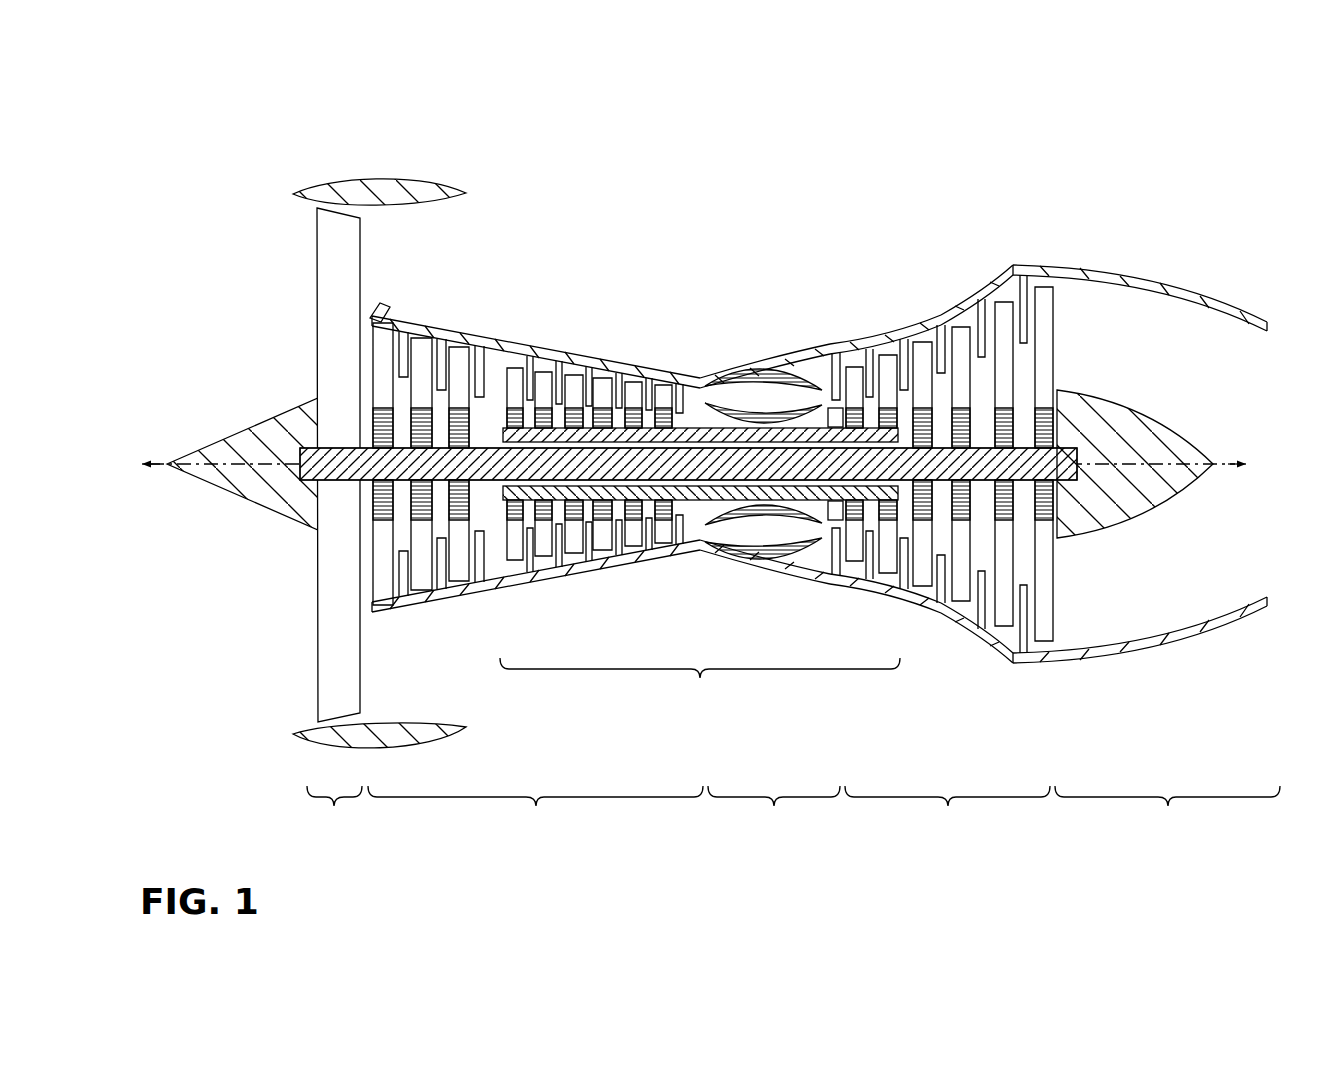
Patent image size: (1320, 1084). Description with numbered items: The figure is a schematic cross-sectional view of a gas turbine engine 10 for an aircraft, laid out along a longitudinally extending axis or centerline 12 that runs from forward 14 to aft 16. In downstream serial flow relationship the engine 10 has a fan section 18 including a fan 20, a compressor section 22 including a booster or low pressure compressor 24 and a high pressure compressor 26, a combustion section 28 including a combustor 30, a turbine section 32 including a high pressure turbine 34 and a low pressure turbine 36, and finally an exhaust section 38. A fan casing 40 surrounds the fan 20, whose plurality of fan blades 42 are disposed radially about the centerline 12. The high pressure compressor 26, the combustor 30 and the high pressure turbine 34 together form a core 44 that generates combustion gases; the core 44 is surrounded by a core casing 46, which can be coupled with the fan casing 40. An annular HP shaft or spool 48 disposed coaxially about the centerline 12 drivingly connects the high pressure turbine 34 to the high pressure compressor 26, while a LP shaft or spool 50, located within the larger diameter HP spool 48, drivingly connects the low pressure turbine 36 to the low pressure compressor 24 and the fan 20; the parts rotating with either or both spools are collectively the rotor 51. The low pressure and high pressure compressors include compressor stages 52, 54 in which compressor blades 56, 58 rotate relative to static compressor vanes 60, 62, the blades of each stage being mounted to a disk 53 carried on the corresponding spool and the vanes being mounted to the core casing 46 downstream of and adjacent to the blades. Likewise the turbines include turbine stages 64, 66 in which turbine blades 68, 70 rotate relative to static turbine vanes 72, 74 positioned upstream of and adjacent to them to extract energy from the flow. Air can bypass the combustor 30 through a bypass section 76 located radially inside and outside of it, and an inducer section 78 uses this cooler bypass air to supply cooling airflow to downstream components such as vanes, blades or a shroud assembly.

The gas turbine engine 10 is at (214, 105).
The centerline 12 is at (222, 462).
The forward 14 is at (135, 465).
The aft 16 is at (1255, 465).
The fan section 18 is at (264, 614).
The fan 20 is at (298, 465).
The compressor section 22 is at (535, 588).
The low pressure compressor 24 is at (492, 604).
The high pressure compressor 26 is at (643, 578).
The combustion section 28 is at (774, 808).
The combustor 30 is at (795, 363).
The turbine section 32 is at (941, 564).
The high pressure turbine 34 is at (830, 602).
The low pressure turbine 36 is at (940, 617).
The exhaust section 38 is at (1146, 547).
The fan casing 40 is at (371, 184).
The fan blades 42 is at (325, 665).
The core 44 is at (700, 679).
The core casing 46 is at (746, 363).
The HP shaft or spool 48 is at (662, 400).
The LP shaft or spool 50 is at (487, 455).
The rotor 51 is at (626, 442).
The compressor stages 52 is at (370, 295).
The disk 53 is at (963, 410).
The compressor stages 54 is at (515, 332).
The compressor blades 56 is at (402, 357).
The compressor blades 58 is at (531, 398).
The static compressor vanes 60 is at (441, 367).
The static compressor vanes 62 is at (589, 402).
The turbine stages 64 is at (861, 331).
The turbine stages 66 is at (984, 280).
The turbine blades 68 is at (887, 372).
The turbine blades 70 is at (1003, 322).
The static turbine vanes 72 is at (870, 392).
The static turbine vanes 74 is at (1022, 340).
The bypass section 76 is at (723, 421).
The inducer section 78 is at (835, 405).